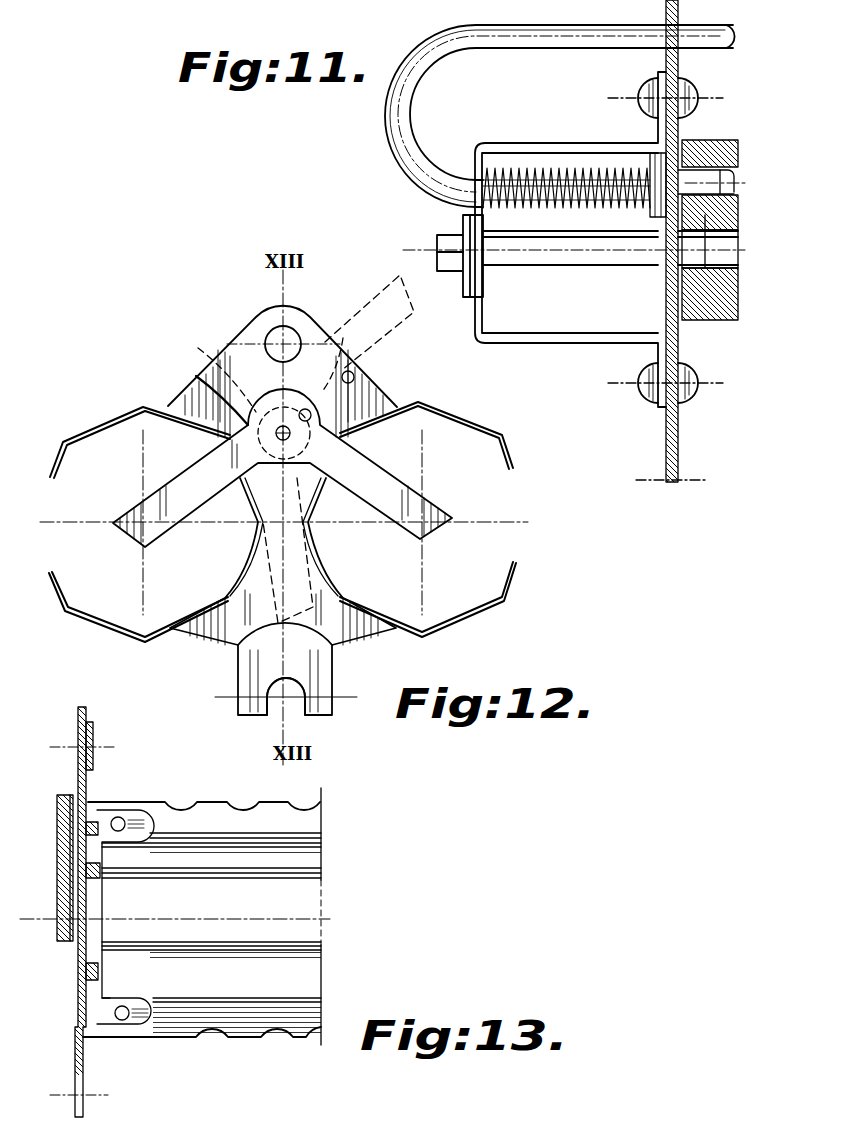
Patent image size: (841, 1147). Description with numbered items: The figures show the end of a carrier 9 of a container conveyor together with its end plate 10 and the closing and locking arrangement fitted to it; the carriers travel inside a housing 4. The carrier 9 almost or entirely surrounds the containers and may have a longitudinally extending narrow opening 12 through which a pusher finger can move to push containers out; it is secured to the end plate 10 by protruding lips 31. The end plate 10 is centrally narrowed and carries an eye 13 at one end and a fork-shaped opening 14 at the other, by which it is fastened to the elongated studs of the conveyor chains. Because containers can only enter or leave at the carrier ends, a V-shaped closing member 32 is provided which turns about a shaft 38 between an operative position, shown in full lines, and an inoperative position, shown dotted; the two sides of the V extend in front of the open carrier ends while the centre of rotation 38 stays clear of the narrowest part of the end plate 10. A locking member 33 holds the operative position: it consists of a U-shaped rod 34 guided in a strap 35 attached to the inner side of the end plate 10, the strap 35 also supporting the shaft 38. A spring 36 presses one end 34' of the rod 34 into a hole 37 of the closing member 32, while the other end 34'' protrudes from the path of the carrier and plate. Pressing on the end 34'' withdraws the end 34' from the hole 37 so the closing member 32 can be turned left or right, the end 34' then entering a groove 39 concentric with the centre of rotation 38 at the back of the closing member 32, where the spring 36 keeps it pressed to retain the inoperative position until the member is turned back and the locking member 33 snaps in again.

In FIG. 13, the housing 4 is at (84, 1102).
In FIG. 12, the carrier 9 is at (83, 613).
In FIG. 13, the carrier 9 is at (173, 1028).
In FIG. 11, the end plate 10 is at (674, 443).
In FIG. 12, the end plate 10 is at (223, 623).
In FIG. 13, the end plate 10 is at (88, 787).
In FIG. 12, the longitudinally extending narrow opening 12 is at (42, 502).
In FIG. 12, the eye 13 is at (273, 328).
In FIG. 13, the eye 13 is at (93, 735).
In FIG. 12, the fork-shaped opening 14 is at (333, 705).
In FIG. 13, the protruding lip 31 is at (136, 1007).
In FIG. 11, the closing member 32 is at (713, 320).
In FIG. 12, the closing member 32 is at (157, 532).
In FIG. 13, the closing member 32 is at (58, 933).
In FIG. 11, the locking member 33 is at (634, 164).
In FIG. 11, the U-shaped rod 34 is at (559, 116).
In FIG. 11, the end of the rod 34' is at (713, 166).
In FIG. 11, the other end of the rod 34'' is at (722, 54).
In FIG. 11, the strap 35 is at (508, 148).
In FIG. 11, the spring 36 is at (585, 207).
In FIG. 11, the hole 37 is at (746, 174).
In FIG. 12, the hole 37 is at (312, 413).
In FIG. 11, the shaft 38 is at (550, 265).
In FIG. 12, the shaft 38 is at (196, 377).
In FIG. 11, the groove 39 is at (733, 217).
In FIG. 12, the groove 39 is at (264, 393).